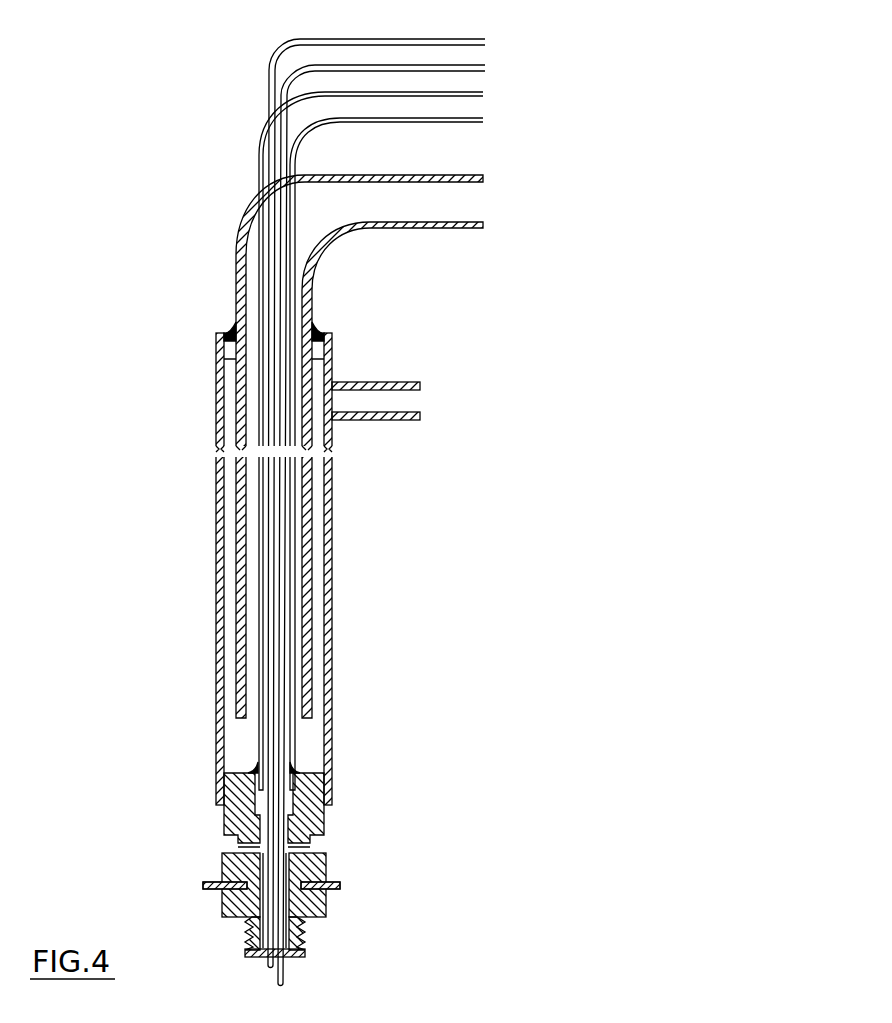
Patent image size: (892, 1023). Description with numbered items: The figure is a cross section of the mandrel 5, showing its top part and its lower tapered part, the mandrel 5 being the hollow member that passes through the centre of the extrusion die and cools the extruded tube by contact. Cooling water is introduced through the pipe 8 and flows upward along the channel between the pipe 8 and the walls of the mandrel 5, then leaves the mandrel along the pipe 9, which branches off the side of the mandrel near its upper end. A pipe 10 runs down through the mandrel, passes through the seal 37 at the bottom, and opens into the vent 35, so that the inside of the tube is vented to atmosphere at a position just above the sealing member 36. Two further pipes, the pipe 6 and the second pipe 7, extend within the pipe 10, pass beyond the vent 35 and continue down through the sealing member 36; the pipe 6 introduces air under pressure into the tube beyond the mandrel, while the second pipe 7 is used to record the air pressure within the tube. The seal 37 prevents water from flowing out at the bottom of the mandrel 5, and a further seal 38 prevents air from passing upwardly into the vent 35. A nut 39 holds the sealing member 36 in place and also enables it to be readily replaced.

The mandrel 5 is at (328, 511).
The pipe 6 is at (473, 66).
The second pipe 7 is at (365, 46).
The pipe 8 is at (473, 203).
The pipe 9 is at (412, 404).
The pipe 10 is at (475, 107).
The vent 35 is at (236, 847).
The sealing member 36 is at (203, 884).
The seal 37 is at (230, 802).
The further seal 38 is at (302, 953).
The nut 39 is at (318, 912).